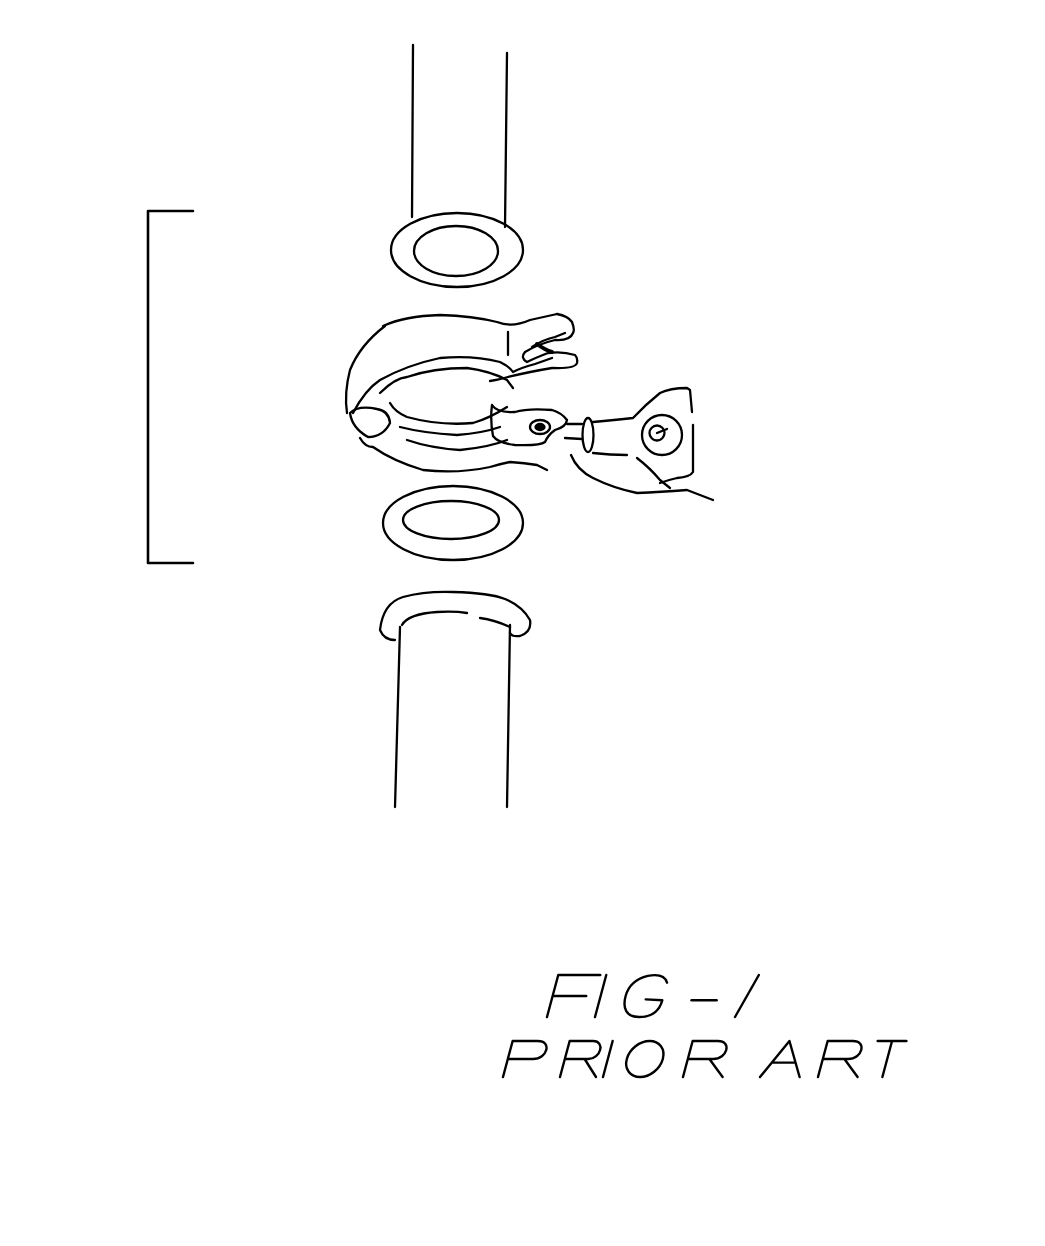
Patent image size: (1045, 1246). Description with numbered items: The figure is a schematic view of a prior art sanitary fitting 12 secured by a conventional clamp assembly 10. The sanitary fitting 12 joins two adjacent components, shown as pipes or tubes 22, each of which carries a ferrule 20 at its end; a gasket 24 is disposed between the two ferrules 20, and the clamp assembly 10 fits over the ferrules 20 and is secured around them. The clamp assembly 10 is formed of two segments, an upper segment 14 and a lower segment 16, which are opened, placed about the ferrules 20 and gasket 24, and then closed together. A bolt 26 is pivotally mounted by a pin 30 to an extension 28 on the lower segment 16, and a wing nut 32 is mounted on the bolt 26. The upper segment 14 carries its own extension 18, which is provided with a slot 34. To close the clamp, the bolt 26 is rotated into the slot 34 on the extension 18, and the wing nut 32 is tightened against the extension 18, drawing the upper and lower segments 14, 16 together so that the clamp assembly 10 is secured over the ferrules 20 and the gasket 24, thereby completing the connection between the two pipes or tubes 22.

The clamp assembly 10 is at (857, 199).
The sanitary fitting 12 is at (112, 387).
The upper segment 14 is at (379, 327).
The lower segment 16 is at (379, 455).
The extension 18 is at (593, 313).
The ferrule 20 is at (589, 418).
The pipe or tube 22 is at (594, 426).
The gasket 24 is at (548, 544).
The bolt 26 is at (704, 445).
The extension 28 is at (679, 481).
The pin 30 is at (690, 389).
The wing nut 32 is at (767, 419).
The slot 34 is at (682, 305).